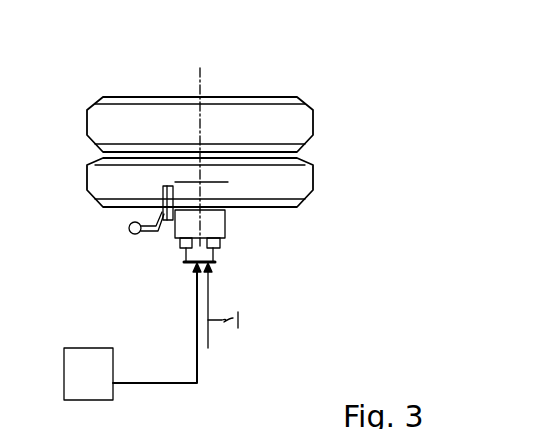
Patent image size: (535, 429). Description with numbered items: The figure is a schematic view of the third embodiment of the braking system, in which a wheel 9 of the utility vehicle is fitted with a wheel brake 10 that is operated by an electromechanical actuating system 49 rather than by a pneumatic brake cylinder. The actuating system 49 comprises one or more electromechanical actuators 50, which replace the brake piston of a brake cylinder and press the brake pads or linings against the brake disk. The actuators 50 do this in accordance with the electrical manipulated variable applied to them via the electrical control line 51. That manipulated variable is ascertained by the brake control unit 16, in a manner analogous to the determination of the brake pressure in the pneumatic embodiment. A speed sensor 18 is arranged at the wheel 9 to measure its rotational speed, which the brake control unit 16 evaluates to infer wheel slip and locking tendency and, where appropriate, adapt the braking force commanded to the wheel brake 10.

The wheel 9 is at (292, 183).
The wheel brake 10 is at (215, 232).
The brake control unit 16 is at (88, 374).
The speed sensor 18 is at (163, 186).
The electromechanical actuating system 49 is at (160, 248).
The electromechanical actuator 50 is at (183, 257).
The electrical control line 51 is at (198, 367).